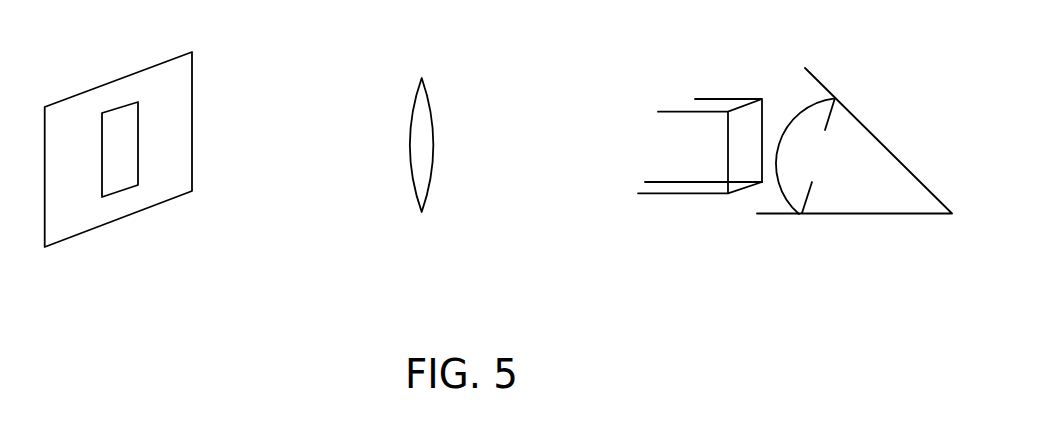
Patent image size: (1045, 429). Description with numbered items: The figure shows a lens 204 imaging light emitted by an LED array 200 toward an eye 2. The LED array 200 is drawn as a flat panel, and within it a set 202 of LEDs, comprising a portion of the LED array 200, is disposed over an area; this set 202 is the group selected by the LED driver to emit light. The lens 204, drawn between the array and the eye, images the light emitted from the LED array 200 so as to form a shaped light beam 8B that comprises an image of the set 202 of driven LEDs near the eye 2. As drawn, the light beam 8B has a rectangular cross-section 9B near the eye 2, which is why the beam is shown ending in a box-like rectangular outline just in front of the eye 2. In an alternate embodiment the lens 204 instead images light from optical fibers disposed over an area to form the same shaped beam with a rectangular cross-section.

The LED array 200 is at (155, 78).
The set of LEDs 202 is at (122, 122).
The lens 204 is at (435, 98).
The rectangular cross-section 9B is at (750, 123).
The shaped light beam 8B is at (682, 157).
The eye 2 is at (822, 82).